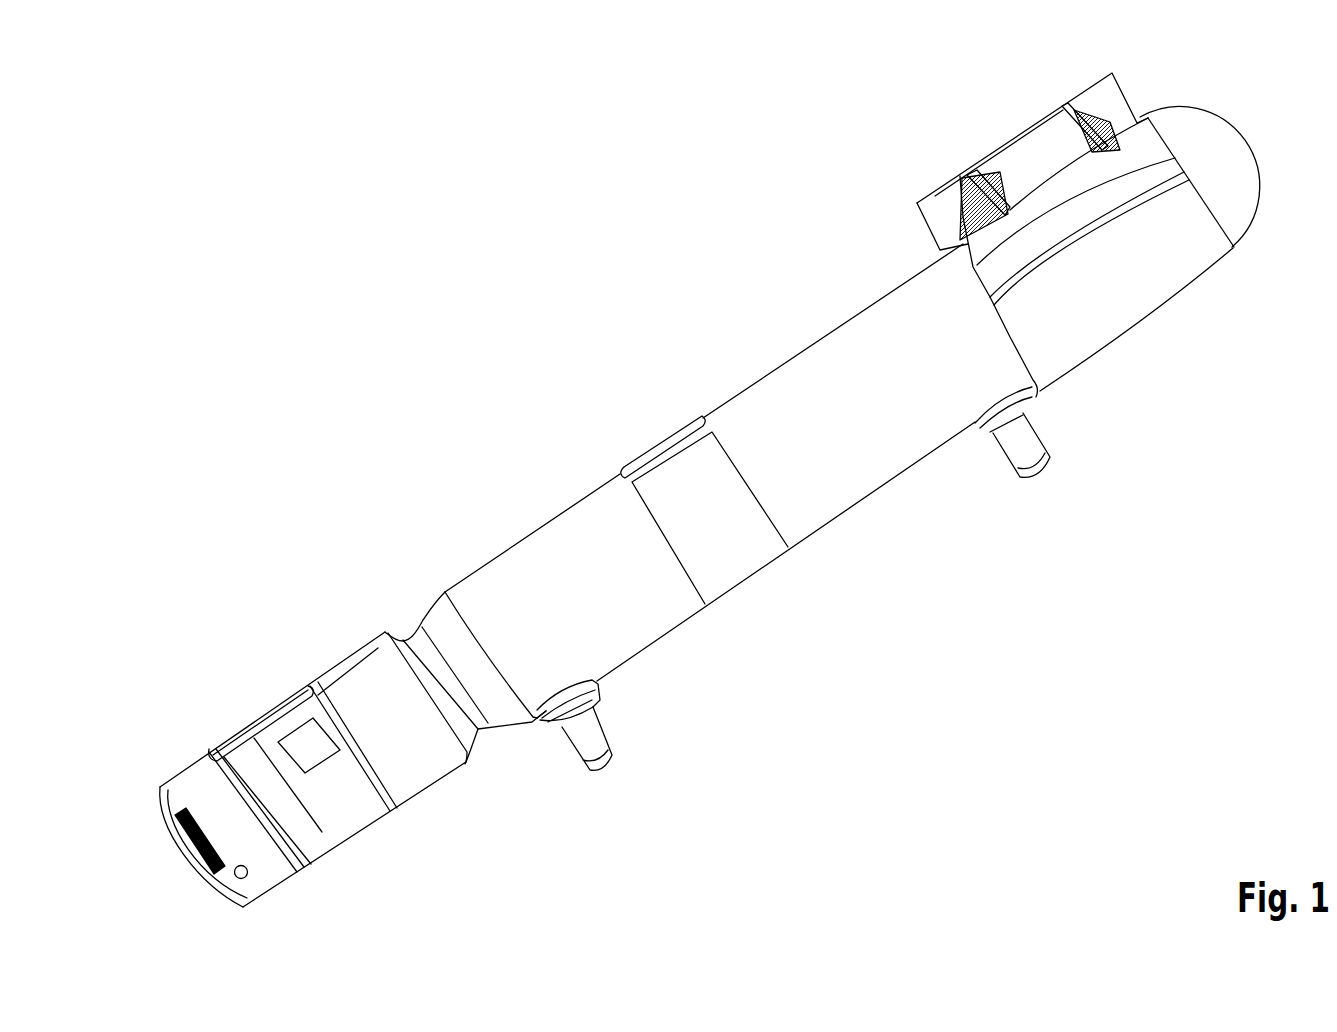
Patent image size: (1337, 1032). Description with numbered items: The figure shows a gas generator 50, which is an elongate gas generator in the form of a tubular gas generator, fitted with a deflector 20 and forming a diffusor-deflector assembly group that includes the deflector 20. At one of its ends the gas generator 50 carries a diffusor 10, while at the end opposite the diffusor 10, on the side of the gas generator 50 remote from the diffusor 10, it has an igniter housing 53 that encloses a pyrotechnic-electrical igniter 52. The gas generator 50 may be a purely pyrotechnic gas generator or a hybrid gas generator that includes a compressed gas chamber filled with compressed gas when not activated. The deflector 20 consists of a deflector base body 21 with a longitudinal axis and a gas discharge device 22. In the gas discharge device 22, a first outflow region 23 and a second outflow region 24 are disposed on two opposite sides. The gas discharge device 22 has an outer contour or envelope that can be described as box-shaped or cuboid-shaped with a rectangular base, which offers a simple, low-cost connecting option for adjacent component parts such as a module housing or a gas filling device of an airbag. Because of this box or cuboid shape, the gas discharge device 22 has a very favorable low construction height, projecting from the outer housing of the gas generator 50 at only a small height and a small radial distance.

The diffusor 10 is at (1268, 237).
The deflector 20 is at (1088, 225).
The deflector base body 21 is at (1162, 290).
The gas discharge device 22 is at (1153, 98).
The first outflow region 23 is at (1108, 122).
The second outflow region 24 is at (953, 242).
The gas generator 50 is at (797, 317).
The pyrotechnic-electrical igniter 52 is at (203, 853).
The igniter housing 53 is at (167, 742).